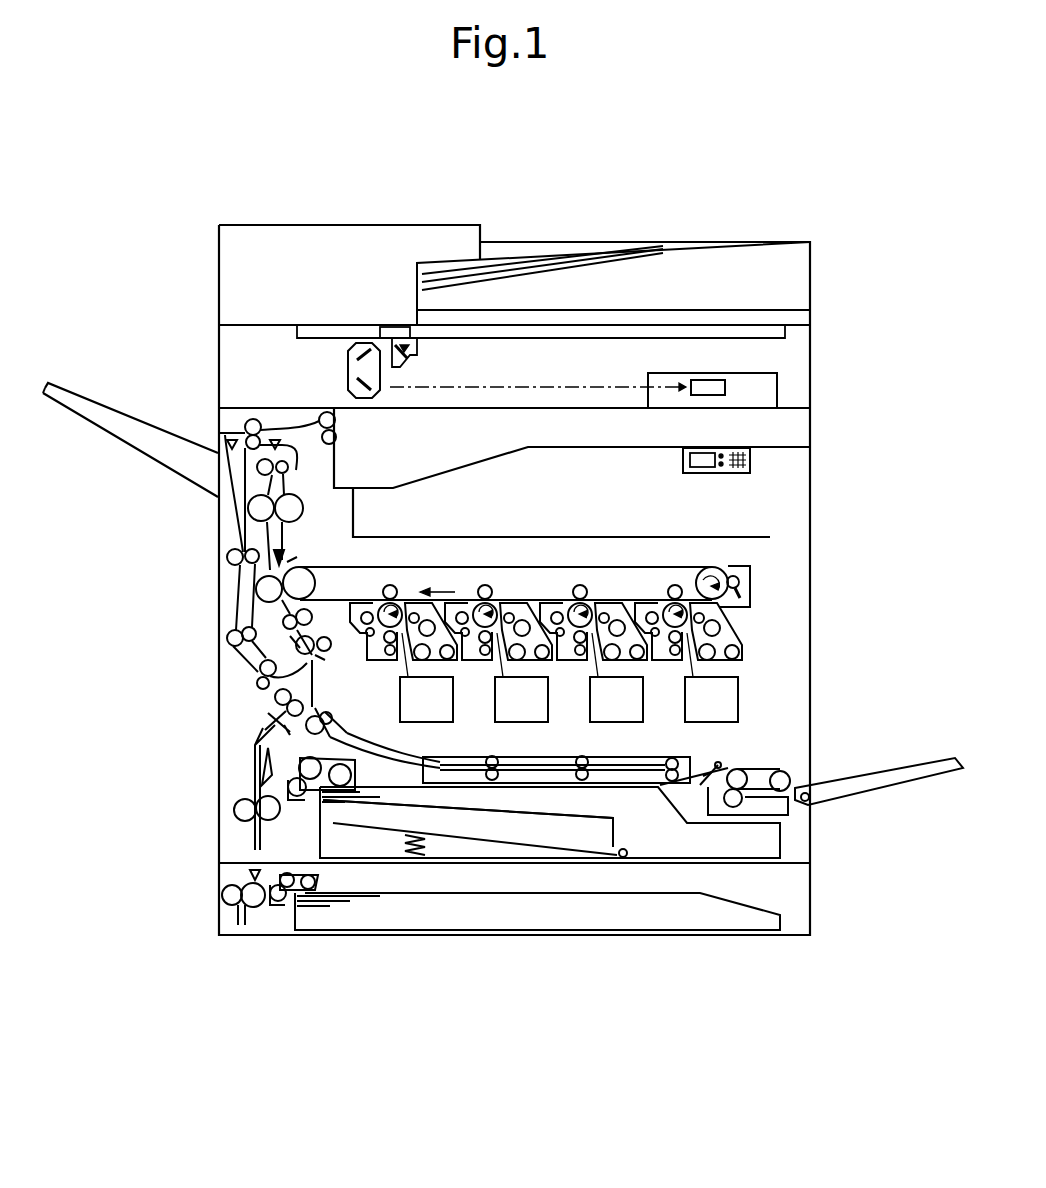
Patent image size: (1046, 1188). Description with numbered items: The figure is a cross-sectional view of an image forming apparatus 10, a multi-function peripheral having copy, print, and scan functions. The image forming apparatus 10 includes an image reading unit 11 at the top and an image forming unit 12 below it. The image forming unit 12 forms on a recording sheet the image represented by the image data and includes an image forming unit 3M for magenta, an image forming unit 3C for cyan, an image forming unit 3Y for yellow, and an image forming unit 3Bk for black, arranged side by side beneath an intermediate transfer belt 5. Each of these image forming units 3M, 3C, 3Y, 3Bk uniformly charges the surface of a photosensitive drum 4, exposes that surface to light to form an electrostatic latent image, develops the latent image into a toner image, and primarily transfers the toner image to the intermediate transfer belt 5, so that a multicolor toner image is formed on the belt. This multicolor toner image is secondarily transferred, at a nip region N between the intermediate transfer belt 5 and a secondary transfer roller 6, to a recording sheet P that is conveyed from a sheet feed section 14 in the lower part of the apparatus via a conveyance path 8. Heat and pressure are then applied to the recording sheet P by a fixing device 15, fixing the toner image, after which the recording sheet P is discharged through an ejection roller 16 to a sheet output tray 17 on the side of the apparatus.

The image forming apparatus 10 is at (526, 167).
The image reading unit 11 is at (816, 294).
The image forming unit 12 is at (766, 648).
The sheet feed section 14 is at (770, 943).
The fixing device 15 is at (260, 507).
The ejection roller 16 is at (318, 420).
The sheet output tray 17 is at (425, 474).
The image forming unit for magenta 3M is at (390, 582).
The image forming unit for cyan 3C is at (485, 582).
The image forming unit for yellow 3Y is at (580, 582).
The image forming unit for black 3Bk is at (665, 582).
The photosensitive drum 4 is at (475, 603).
The intermediate transfer belt 5 is at (688, 568).
The secondary transfer roller 6 is at (243, 597).
The conveyance path 8 is at (272, 721).
The nip region N is at (245, 553).
The recording sheet P is at (600, 808).